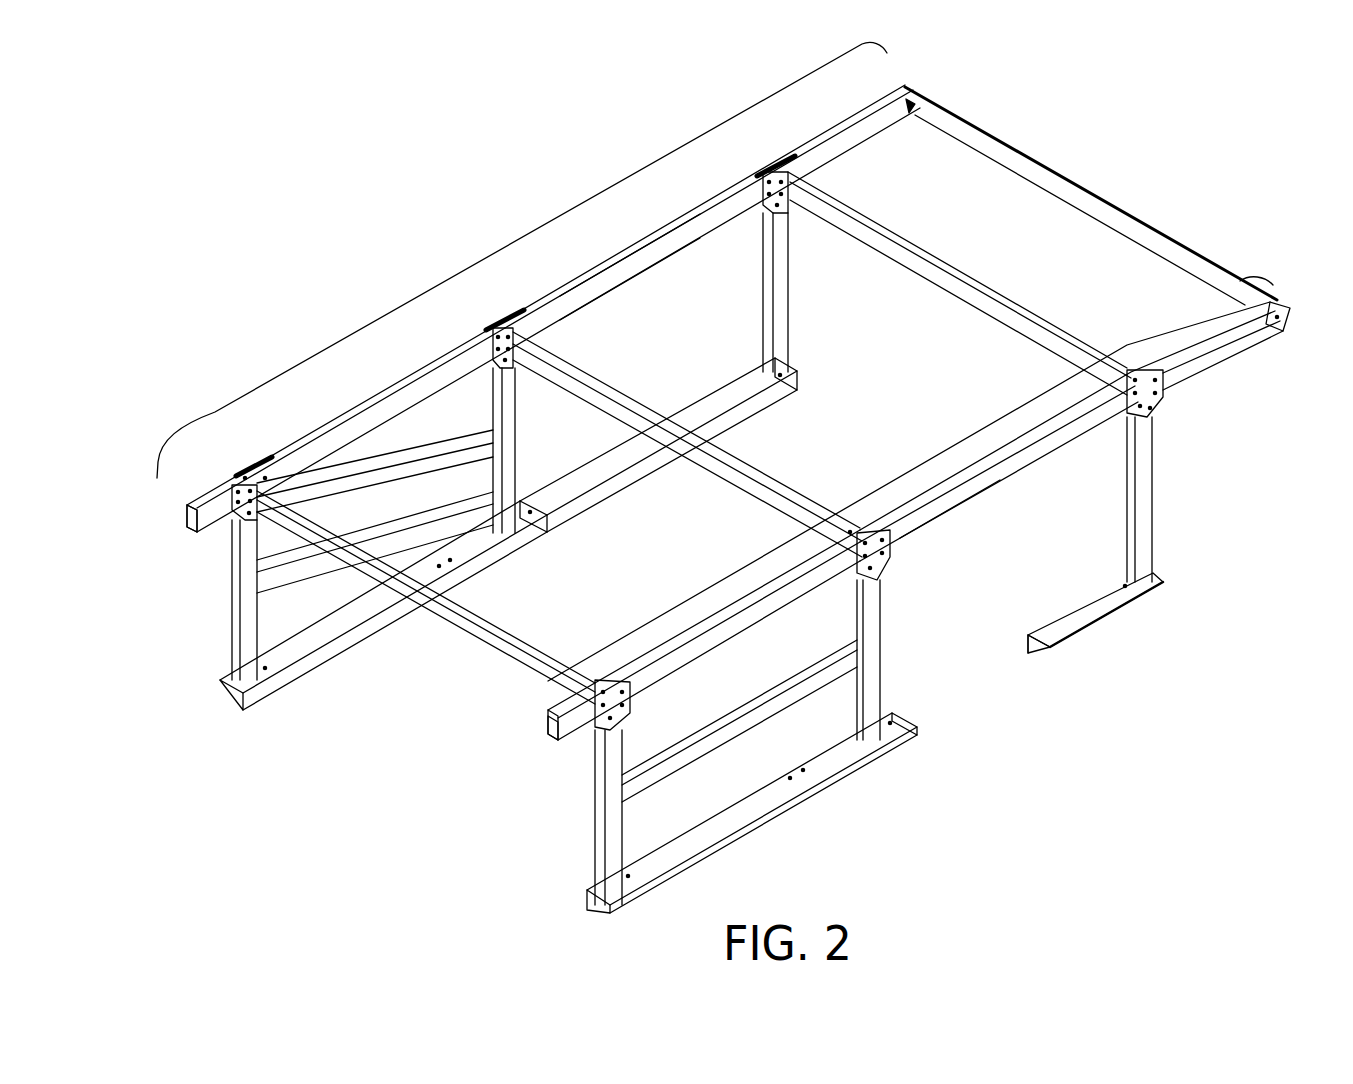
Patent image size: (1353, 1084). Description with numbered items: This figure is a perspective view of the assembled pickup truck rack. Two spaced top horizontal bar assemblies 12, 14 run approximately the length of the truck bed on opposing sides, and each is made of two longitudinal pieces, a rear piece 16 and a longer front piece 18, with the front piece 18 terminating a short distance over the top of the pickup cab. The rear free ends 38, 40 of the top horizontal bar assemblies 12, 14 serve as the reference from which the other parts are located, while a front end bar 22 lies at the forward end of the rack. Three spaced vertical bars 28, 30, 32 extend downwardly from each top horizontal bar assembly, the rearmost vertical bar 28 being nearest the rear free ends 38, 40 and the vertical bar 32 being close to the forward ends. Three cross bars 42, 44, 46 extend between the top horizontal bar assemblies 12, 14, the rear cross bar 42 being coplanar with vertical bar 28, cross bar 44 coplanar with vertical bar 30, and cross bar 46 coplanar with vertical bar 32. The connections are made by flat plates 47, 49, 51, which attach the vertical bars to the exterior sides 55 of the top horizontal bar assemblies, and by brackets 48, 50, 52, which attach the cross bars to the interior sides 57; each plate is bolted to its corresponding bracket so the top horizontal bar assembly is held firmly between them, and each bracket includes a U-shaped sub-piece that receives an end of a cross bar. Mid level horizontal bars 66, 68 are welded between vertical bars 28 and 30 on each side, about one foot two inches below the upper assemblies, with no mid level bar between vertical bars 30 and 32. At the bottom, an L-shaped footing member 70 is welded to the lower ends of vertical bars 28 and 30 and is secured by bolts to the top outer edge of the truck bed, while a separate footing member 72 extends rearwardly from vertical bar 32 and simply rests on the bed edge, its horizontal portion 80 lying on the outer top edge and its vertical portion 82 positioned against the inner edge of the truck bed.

The top horizontal bar assembly 12 is at (485, 265).
The top horizontal bar assembly 14 is at (880, 486).
The rear piece 16 is at (379, 386).
The front piece 18 is at (618, 262).
The front end bar 22 is at (1093, 193).
The vertical bar 28 is at (230, 605).
The vertical bar 30 is at (517, 427).
The vertical bar 32 is at (790, 297).
The rear free end 38 is at (183, 537).
The rear free end 40 is at (545, 740).
The rear cross bar 42 is at (462, 632).
The cross bar 44 is at (707, 467).
The cross bar 46 is at (980, 280).
The flat plate 47 is at (605, 707).
The bracket 48 is at (230, 530).
The flat plate 49 is at (893, 553).
The bracket 50 is at (500, 367).
The flat plate 51 is at (1150, 393).
The bracket 52 is at (760, 213).
The exterior side 55 is at (958, 497).
The interior side 57 is at (620, 278).
The mid level horizontal bar 66 is at (370, 496).
The mid level horizontal bar 68 is at (733, 747).
The footing member 70 is at (315, 672).
The footing member 72 is at (747, 422).
The horizontal portion 80 is at (1097, 608).
The vertical portion 82 is at (1063, 612).